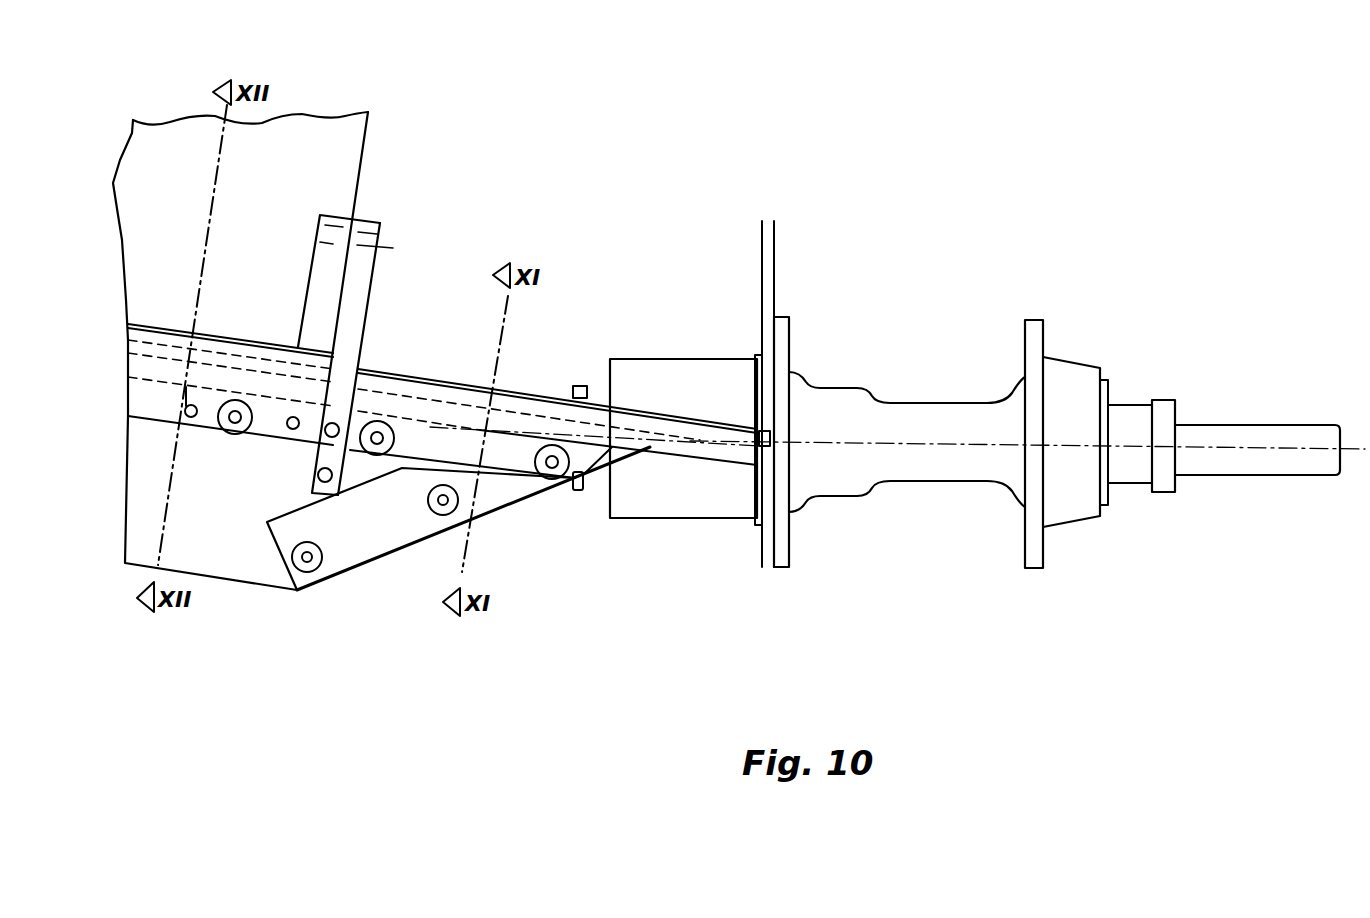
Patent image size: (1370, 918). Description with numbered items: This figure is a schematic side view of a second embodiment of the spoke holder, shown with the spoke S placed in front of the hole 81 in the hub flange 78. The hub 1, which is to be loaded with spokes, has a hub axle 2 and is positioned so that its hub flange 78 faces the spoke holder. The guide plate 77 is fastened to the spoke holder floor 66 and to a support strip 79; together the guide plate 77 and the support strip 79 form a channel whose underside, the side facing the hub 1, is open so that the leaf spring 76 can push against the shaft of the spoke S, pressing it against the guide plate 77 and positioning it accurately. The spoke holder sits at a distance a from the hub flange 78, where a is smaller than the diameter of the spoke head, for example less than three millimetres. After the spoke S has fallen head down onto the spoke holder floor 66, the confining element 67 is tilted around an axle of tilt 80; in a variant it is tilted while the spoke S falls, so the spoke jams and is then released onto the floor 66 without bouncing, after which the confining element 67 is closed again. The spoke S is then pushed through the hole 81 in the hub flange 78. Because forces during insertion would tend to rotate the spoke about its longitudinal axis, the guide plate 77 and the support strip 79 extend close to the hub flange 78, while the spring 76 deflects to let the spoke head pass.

The hub 1 is at (848, 398).
The hub axle 2 is at (1273, 450).
The spoke holder floor 66 is at (148, 485).
The confining element 67 is at (345, 164).
The leaf spring 76 is at (627, 465).
The guide plate 77 is at (425, 374).
The hub flange 78 is at (785, 545).
The support strip 79 is at (522, 472).
The axle of tilt 80 is at (318, 230).
The hole 81 is at (772, 439).
The spoke s is at (553, 407).
The distance a is at (841, 236).